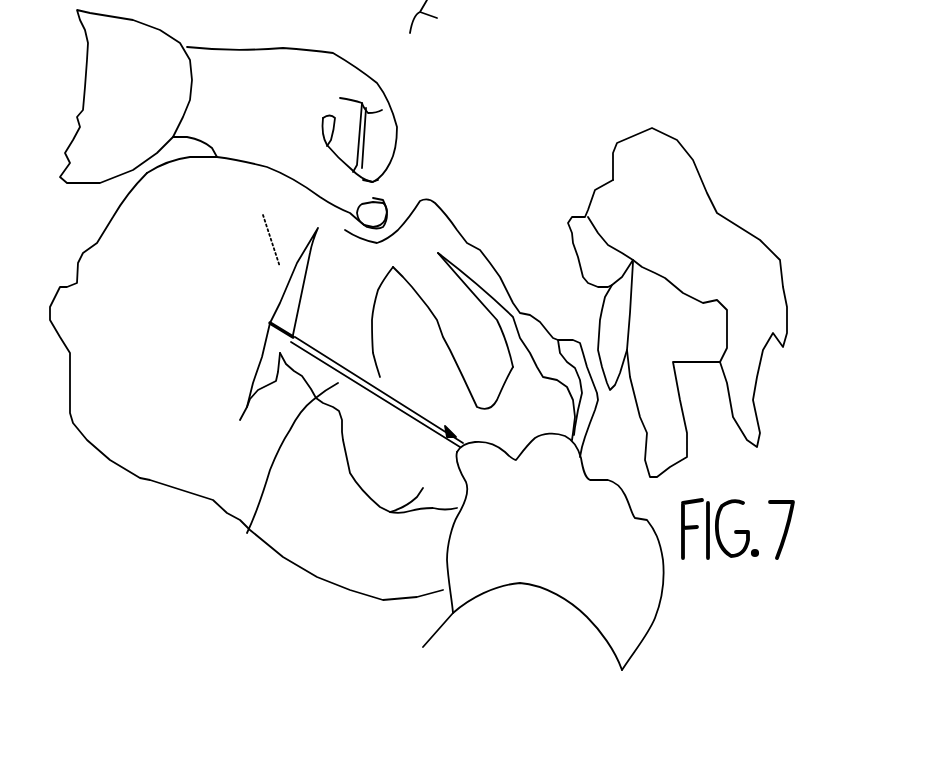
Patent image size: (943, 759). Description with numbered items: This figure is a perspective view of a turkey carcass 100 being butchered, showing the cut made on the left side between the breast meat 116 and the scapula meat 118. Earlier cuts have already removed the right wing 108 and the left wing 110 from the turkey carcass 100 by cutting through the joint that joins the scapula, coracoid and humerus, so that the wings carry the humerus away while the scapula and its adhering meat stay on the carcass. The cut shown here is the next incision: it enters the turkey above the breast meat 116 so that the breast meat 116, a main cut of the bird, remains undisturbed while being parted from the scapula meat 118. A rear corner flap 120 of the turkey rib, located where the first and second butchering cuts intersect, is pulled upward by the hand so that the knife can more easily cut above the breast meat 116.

The turkey carcass 100 is at (125, 222).
The right wing 108 is at (618, 318).
The left wing 110 is at (745, 237).
The breast meat 116 is at (250, 530).
The scapula meat 118 is at (343, 317).
The rear corner flap 120 is at (420, 201).